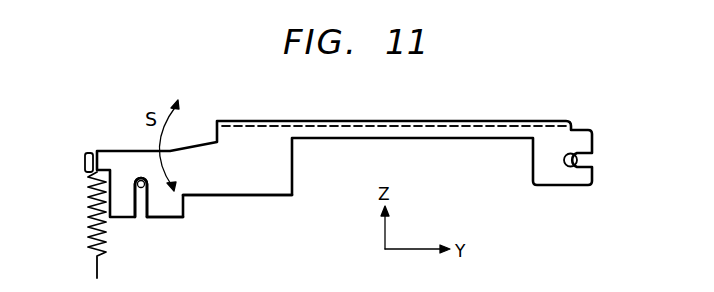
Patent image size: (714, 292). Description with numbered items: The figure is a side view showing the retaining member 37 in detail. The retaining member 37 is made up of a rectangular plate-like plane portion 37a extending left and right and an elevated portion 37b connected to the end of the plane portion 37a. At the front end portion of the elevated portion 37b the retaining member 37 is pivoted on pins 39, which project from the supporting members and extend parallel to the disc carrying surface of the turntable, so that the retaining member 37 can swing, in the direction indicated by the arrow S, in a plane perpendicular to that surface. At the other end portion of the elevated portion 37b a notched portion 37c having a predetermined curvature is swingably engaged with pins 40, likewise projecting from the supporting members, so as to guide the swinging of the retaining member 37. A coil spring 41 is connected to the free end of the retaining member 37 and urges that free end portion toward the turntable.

The retaining member 37 is at (521, 121).
The plane portion 37a is at (466, 120).
The elevated portion 37b is at (260, 182).
The notched portion 37c is at (144, 207).
The pins 39 is at (578, 160).
The pins 40 is at (138, 178).
The coil spring 41 is at (88, 208).